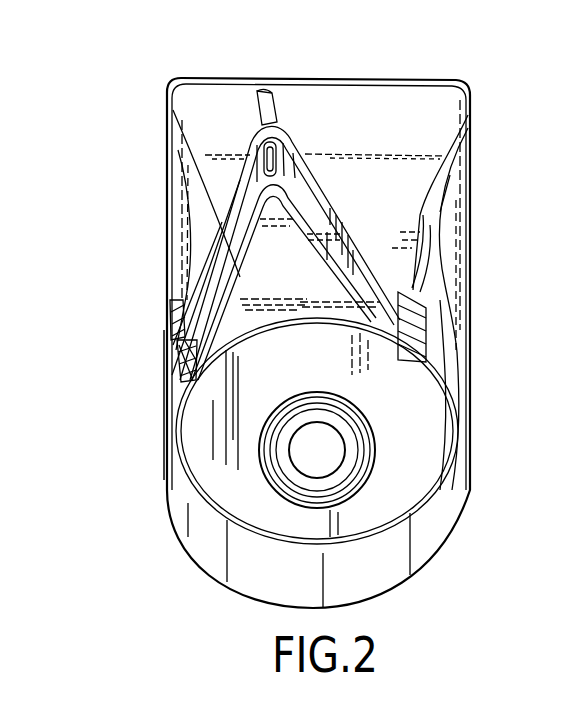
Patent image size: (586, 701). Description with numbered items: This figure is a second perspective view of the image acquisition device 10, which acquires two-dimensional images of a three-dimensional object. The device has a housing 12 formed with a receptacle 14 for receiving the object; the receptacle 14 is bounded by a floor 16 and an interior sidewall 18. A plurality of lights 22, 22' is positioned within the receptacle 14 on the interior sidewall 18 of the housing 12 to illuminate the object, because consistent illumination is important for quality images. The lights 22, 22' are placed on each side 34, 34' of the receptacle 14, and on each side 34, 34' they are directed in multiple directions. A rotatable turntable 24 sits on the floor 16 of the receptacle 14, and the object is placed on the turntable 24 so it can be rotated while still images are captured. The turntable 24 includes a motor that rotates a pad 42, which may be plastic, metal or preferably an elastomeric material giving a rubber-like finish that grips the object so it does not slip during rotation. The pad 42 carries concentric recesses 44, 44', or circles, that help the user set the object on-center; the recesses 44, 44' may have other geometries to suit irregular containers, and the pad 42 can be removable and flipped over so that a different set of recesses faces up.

The image acquisition device 10 is at (60, 240).
The housing 12 is at (463, 86).
The receptacle 14 is at (262, 262).
The floor 16 is at (340, 293).
The interior sidewall 18 is at (325, 205).
The light 22 is at (152, 363).
The light 22' is at (474, 327).
The rotatable turntable 24 is at (235, 488).
The side of the receptacle 34 is at (176, 242).
The side of the receptacle 34' is at (468, 253).
The pad 42 is at (400, 475).
The concentric recess 44 is at (397, 443).
The recess 44' is at (410, 450).